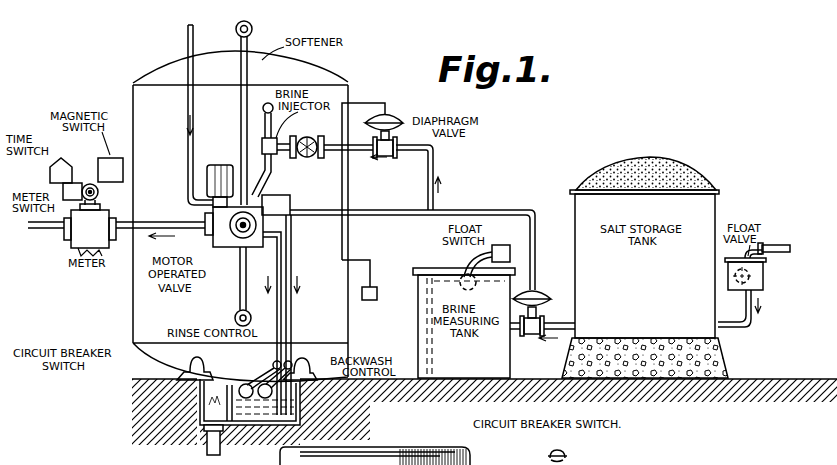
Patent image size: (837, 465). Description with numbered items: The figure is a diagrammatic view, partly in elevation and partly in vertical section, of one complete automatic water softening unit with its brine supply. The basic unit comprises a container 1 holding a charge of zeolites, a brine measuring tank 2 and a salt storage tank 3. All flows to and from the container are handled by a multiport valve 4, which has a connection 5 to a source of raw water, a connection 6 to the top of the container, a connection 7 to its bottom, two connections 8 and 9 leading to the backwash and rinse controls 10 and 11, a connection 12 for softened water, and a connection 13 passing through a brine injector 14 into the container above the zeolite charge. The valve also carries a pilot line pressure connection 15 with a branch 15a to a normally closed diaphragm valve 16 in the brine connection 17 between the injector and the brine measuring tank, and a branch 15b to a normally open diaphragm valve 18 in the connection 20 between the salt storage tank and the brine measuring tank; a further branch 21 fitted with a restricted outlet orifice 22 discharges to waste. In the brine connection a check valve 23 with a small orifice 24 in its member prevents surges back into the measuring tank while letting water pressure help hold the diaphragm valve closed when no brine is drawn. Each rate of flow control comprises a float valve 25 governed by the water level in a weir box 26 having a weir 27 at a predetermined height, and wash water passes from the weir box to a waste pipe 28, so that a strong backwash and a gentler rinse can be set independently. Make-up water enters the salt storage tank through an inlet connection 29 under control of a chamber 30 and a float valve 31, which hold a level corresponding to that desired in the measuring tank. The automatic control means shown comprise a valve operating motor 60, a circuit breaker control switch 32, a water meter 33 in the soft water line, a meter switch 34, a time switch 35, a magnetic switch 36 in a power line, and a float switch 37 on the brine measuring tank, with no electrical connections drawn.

The container 1 is at (165, 65).
The brine measuring tank 2 is at (418, 297).
The salt storage tank 3 is at (716, 211).
The multiport valve 4 is at (213, 235).
The connection to a source of raw water 5 is at (186, 176).
The connection to the top of the container 6 is at (249, 71).
The connection to the bottom of the container 7 is at (253, 303).
The connection leading to backwash control 8 is at (293, 250).
The connection leading to rinse control 9 is at (275, 250).
The backwash control 10 is at (288, 360).
The rinse control 11 is at (272, 364).
The connection for softened water 12 is at (163, 213).
The connection through brine injector 13 is at (273, 175).
The brine injector 14 is at (262, 143).
The pilot line pressure connection 15 is at (297, 214).
The branch of pilot line 15a is at (352, 170).
The branch of pilot line 15b is at (381, 212).
The diaphragm valve 16 is at (397, 120).
The brine connection 17 is at (435, 157).
The diaphragm valve 18 is at (534, 290).
The connection between salt storage tank and brine measuring tank 20 is at (562, 324).
The branch 21 is at (372, 272).
The restricted outlet orifice 22 is at (378, 293).
The check valve 23 is at (328, 137).
The small orifice 24 is at (311, 157).
The float valve 25 is at (300, 392).
The weir box 26 is at (226, 386).
The weir 27 is at (225, 395).
The waste pipe 28 is at (207, 445).
The inlet connection 29 is at (776, 247).
The chamber 30 is at (768, 292).
The float valve 31 is at (763, 262).
The circuit breaker control switch 32 is at (88, 345).
The water meter 33 is at (80, 238).
The meter switch 34 is at (72, 198).
The time switch 35 is at (50, 176).
The magnetic switch 36 is at (124, 170).
The float switch 37 is at (510, 250).
The valve operating motor 60 is at (215, 165).